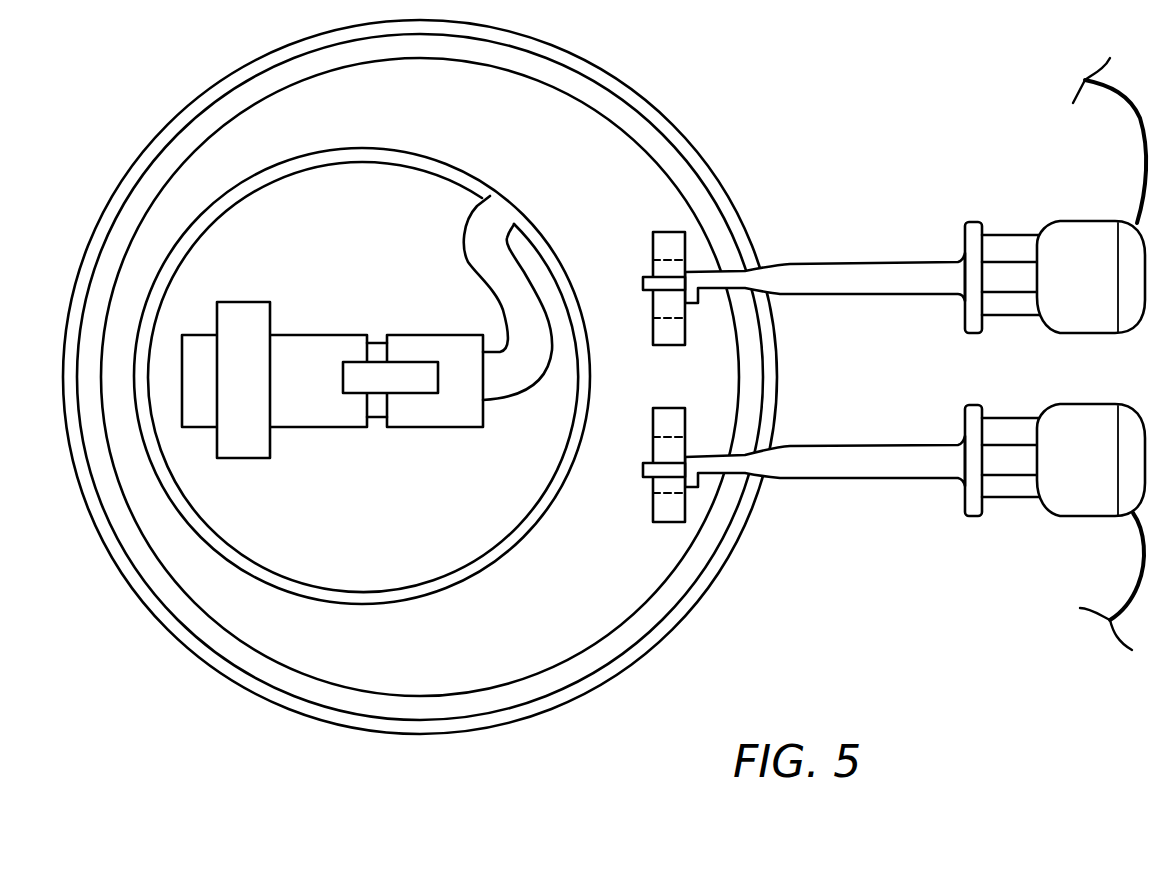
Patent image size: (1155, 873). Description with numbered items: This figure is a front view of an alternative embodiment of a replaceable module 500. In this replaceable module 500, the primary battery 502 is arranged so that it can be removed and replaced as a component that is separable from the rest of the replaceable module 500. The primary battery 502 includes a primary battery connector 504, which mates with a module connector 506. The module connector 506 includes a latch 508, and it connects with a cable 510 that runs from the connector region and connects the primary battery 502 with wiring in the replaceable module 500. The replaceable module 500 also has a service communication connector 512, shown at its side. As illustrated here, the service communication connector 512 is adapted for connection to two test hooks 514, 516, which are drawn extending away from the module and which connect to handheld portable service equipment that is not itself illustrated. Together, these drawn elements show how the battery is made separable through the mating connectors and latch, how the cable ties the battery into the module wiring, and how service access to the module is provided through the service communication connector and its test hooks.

The replaceable module 500 is at (740, 111).
The primary battery 502 is at (293, 252).
The primary battery connector 504 is at (297, 427).
The module connector 506 is at (407, 427).
The latch 508 is at (373, 427).
The cable 510 is at (463, 242).
The service communication connector 512 is at (687, 424).
The test hook 514 is at (867, 263).
The test hook 516 is at (830, 447).